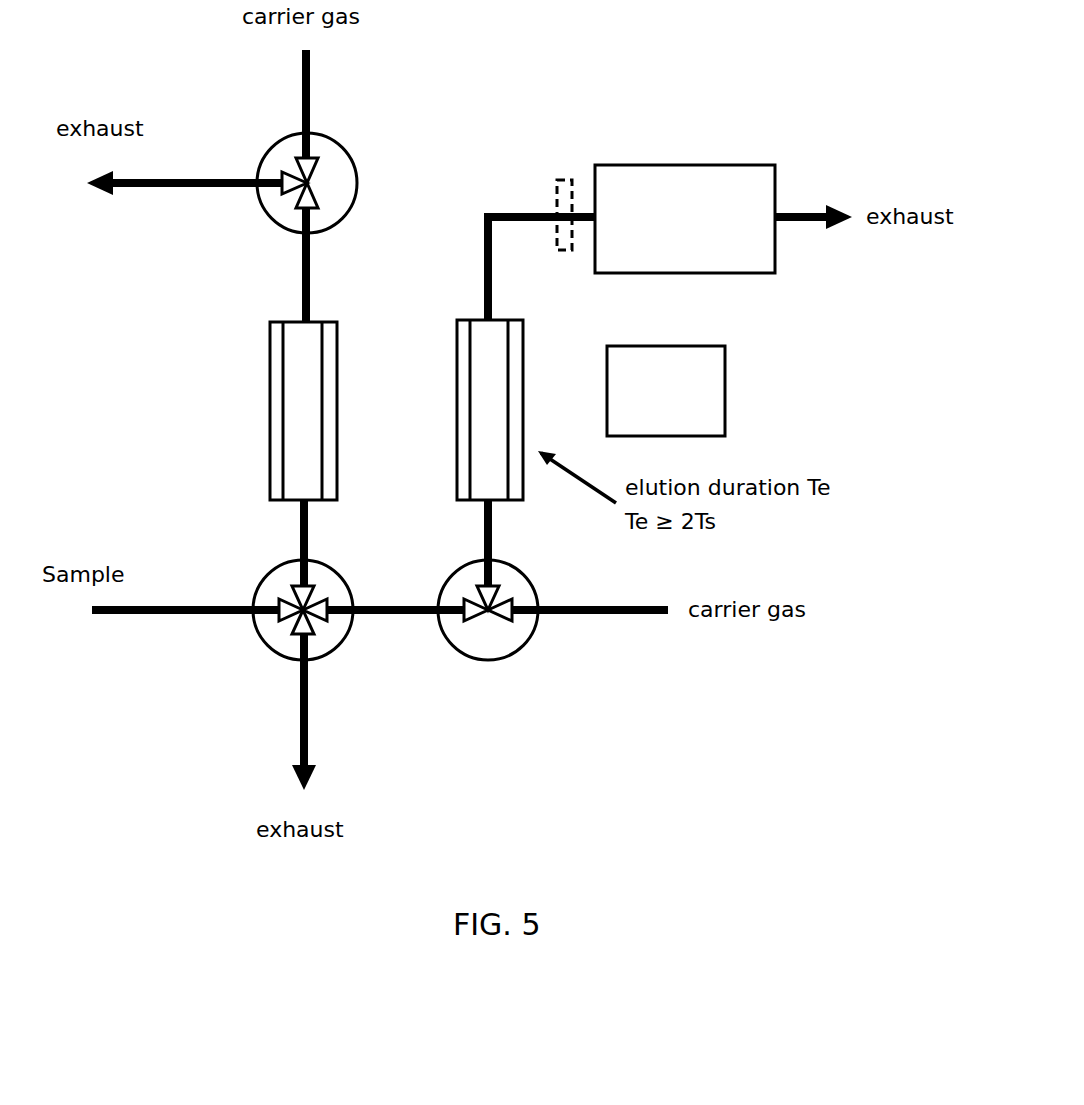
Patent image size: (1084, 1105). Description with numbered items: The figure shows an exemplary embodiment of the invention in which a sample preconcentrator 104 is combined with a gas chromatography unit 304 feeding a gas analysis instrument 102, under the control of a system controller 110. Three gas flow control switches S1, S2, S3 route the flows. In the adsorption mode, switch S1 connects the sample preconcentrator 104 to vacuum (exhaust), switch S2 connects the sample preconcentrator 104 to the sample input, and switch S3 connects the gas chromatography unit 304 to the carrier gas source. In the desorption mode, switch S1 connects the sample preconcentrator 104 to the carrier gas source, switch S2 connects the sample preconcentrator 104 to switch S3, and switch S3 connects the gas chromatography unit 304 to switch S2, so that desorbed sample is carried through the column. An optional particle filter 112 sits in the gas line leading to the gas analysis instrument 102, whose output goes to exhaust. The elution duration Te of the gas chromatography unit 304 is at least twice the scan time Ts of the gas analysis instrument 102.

The gas flow control switch S1 is at (334, 152).
The gas flow control switch S2 is at (273, 638).
The gas flow control switch S3 is at (516, 636).
The sample preconcentrator 104 is at (247, 357).
The gas chromatography unit 304 is at (552, 328).
The gas analysis instrument 102 is at (685, 219).
The system controller 110 is at (666, 391).
The particle filter 112 is at (562, 178).